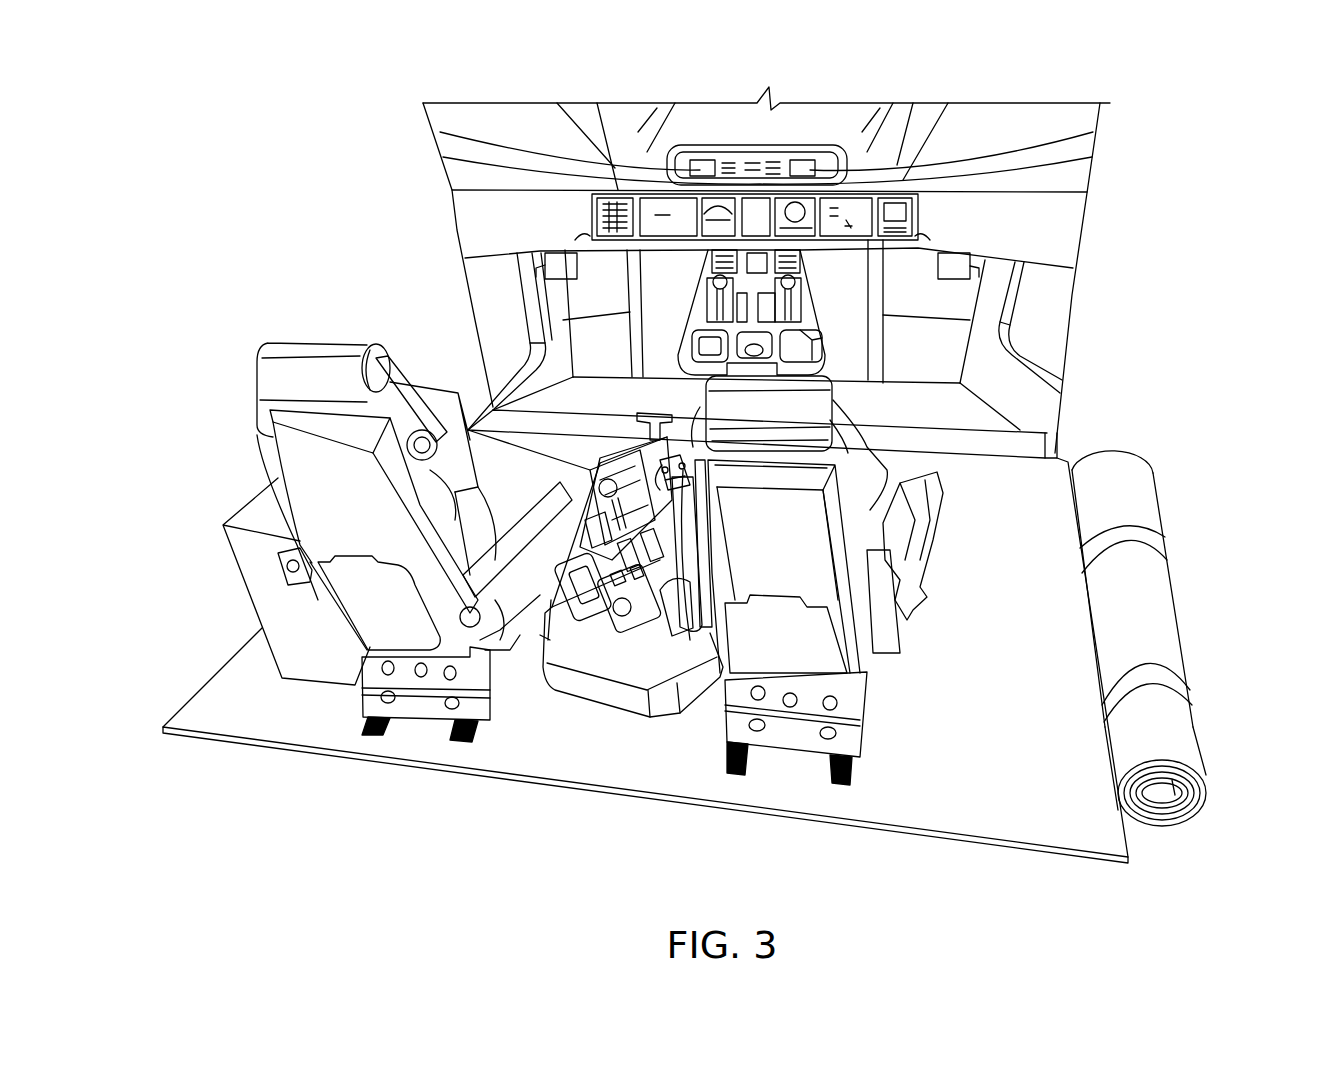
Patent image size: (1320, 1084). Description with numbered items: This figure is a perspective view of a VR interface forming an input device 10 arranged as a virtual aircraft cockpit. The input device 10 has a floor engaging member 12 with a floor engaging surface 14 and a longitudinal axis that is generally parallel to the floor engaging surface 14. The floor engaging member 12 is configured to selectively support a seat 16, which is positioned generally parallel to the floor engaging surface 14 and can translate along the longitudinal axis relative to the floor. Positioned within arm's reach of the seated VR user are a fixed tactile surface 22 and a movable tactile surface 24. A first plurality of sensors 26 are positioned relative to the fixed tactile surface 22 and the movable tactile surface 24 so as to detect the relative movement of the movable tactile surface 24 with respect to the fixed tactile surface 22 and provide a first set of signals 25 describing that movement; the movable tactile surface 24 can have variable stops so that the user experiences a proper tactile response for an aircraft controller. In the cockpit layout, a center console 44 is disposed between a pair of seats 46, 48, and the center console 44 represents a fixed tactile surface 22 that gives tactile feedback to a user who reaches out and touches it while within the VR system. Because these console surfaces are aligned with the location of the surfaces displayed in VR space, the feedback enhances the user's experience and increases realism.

The input device 10 is at (305, 78).
The floor engaging member 12 is at (985, 746).
The floor engaging surface 14 is at (427, 776).
The seat 16 is at (373, 600).
The fixed tactile surface 22 is at (633, 655).
The movable tactile surface 24 is at (270, 410).
The first set of signals 25 is at (585, 637).
The first plurality of sensors 26 is at (493, 660).
The center console 44 is at (602, 527).
The seat 46 is at (786, 556).
The seat 48 is at (356, 513).